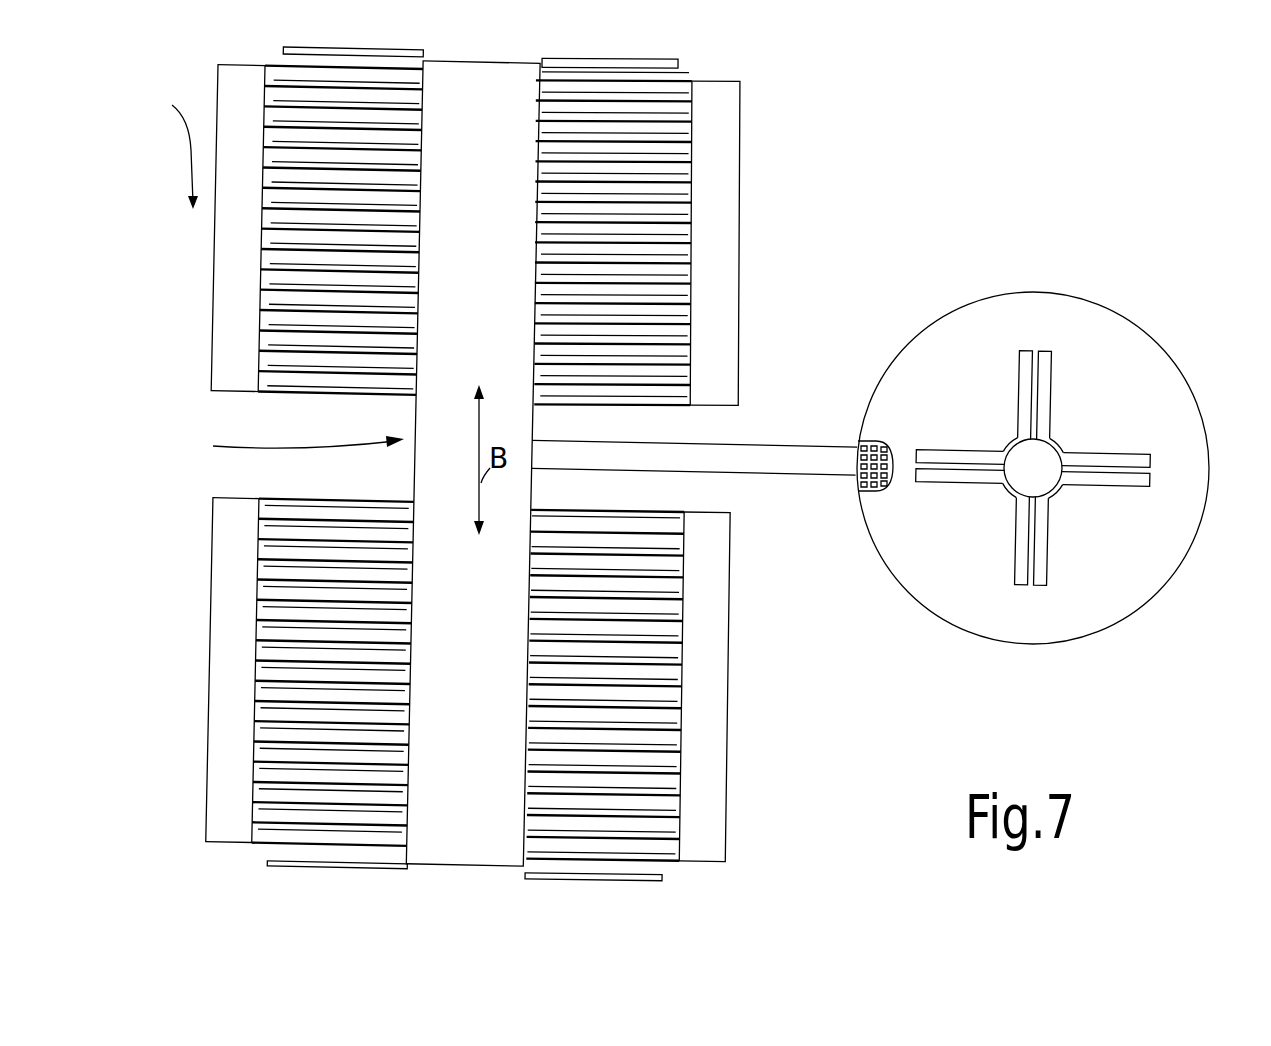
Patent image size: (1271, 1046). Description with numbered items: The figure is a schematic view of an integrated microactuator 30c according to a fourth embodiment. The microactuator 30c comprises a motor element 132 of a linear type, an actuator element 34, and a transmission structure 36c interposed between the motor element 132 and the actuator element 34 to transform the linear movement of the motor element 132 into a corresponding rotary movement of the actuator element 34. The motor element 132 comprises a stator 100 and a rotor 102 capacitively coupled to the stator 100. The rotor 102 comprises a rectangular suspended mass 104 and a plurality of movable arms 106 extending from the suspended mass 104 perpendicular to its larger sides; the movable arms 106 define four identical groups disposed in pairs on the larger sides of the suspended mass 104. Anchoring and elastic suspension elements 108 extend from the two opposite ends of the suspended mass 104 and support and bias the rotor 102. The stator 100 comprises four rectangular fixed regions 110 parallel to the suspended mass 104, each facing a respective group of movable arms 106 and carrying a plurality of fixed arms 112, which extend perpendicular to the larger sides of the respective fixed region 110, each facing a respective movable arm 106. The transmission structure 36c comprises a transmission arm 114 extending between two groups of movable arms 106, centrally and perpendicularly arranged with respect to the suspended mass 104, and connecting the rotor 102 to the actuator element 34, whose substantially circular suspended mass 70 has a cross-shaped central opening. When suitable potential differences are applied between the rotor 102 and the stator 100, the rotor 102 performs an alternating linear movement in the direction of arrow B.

The stator 100 is at (760, 207).
The rotor 102 is at (282, 445).
The suspended mass 104 is at (481, 824).
The movable arms 106 is at (541, 87).
The anchoring and elastic suspension elements 108 is at (562, 56).
The fixed regions 110 is at (718, 263).
The fixed arms 112 is at (388, 150).
The transmission arm 114 is at (793, 457).
The motor element 132 is at (161, 151).
The microactuator 30c is at (1062, 192).
The actuator element 34 is at (1200, 380).
The transmission structure 36c is at (806, 494).
The suspended mass 70 is at (1155, 573).